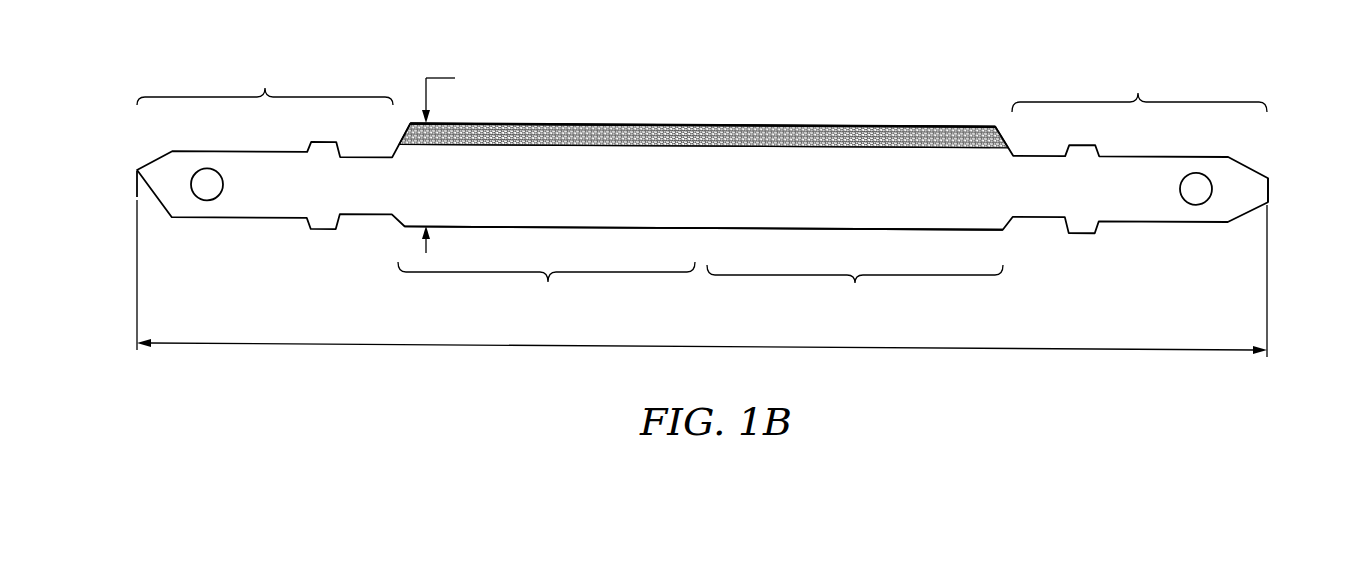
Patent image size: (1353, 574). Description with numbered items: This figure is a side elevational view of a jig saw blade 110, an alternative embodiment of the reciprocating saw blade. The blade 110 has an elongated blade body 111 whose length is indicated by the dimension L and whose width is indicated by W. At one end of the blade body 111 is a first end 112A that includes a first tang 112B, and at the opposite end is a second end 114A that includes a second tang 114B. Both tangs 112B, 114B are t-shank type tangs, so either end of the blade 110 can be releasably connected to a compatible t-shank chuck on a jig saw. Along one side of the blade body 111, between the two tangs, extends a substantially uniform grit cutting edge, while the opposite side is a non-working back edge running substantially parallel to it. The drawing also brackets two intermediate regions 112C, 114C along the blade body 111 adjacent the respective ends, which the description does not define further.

The reciprocating saw blade 110 is at (700, 205).
The blade body 111 is at (987, 216).
The first end 112A is at (265, 84).
The first tang 112B is at (125, 176).
The first central portion 112C is at (546, 285).
The second end 114A is at (1139, 91).
The second tang 114B is at (1278, 188).
The second central portion 114C is at (855, 287).